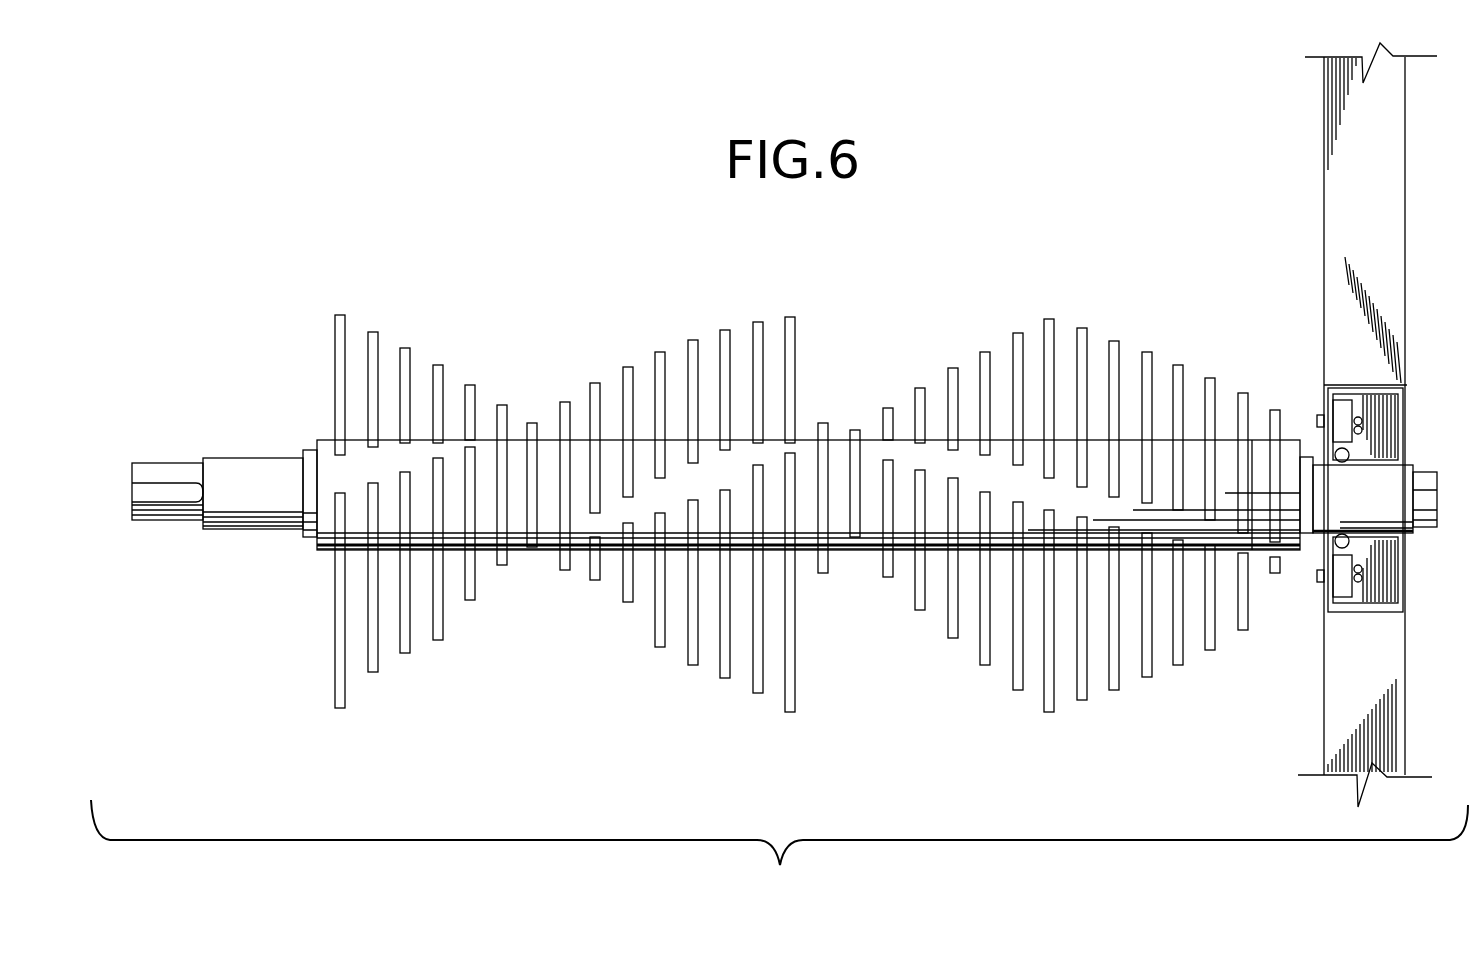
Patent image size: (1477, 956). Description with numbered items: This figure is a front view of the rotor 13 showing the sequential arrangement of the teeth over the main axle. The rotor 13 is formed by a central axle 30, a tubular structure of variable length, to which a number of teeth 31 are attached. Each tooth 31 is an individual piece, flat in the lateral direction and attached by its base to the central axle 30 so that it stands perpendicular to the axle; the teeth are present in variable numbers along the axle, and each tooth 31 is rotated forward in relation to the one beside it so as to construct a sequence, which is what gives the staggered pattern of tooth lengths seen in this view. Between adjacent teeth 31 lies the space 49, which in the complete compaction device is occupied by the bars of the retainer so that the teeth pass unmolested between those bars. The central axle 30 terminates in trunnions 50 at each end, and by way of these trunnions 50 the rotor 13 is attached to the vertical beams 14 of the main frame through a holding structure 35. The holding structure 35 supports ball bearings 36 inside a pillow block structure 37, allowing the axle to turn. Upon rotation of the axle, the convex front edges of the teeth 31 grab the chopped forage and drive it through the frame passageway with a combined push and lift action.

The rotor 13 is at (779, 851).
The vertical beams 14 is at (1378, 217).
The central axle 30 is at (327, 440).
The teeth 31 is at (337, 630).
The holding structure 35 is at (1357, 380).
The ball bearings 36 is at (1355, 456).
The pillow block structure 37 is at (1343, 410).
The space between the teeth 49 is at (1032, 330).
The trunnions 50 is at (266, 530).